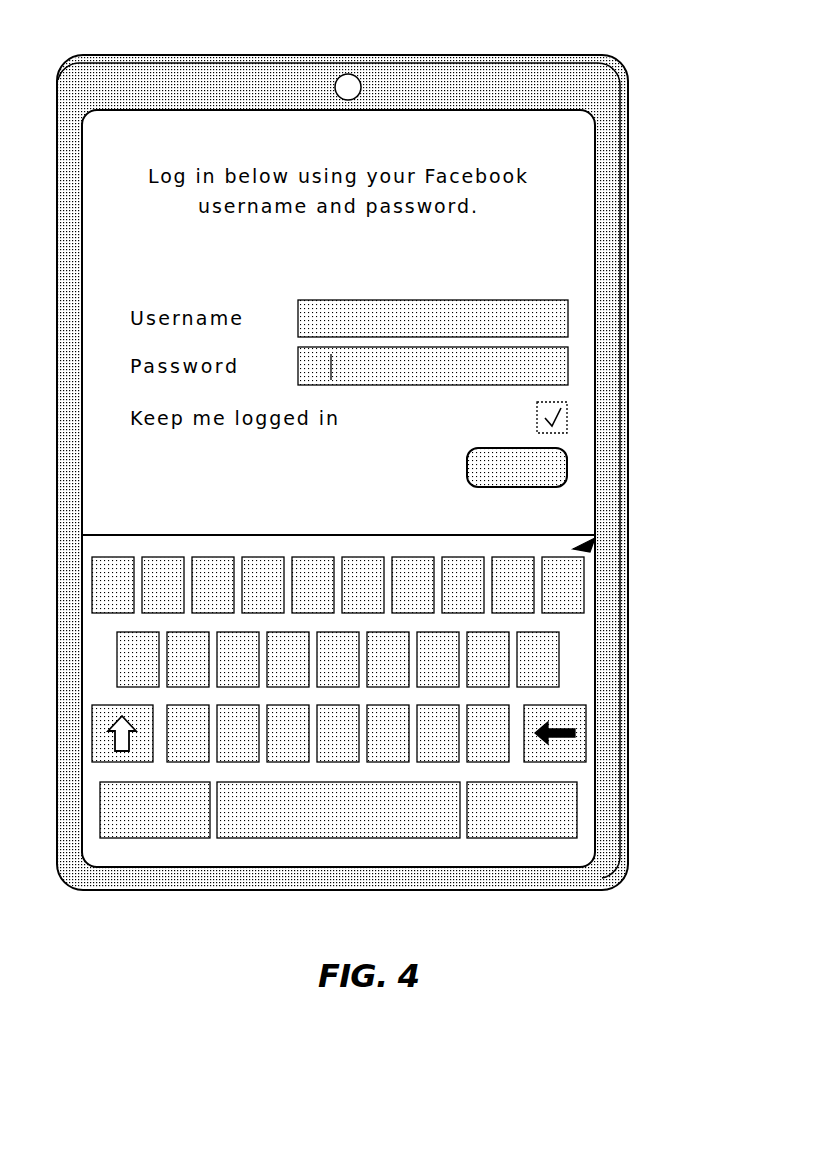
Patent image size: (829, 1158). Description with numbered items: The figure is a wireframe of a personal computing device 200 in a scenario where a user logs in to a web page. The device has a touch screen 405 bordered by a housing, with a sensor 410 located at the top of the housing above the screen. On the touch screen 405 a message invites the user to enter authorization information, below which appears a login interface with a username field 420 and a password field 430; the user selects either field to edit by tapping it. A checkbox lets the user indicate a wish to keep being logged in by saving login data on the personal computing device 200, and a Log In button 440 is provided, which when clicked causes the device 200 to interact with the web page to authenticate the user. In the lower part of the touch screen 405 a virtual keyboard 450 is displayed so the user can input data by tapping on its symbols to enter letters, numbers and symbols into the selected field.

The personal computing device 200 is at (548, 42).
The touch screen 405 is at (177, 108).
The sensor 410 is at (348, 74).
The username field 420 is at (568, 304).
The password field 430 is at (568, 352).
The Log In button 440 is at (567, 457).
The virtual keyboard 450 is at (590, 545).